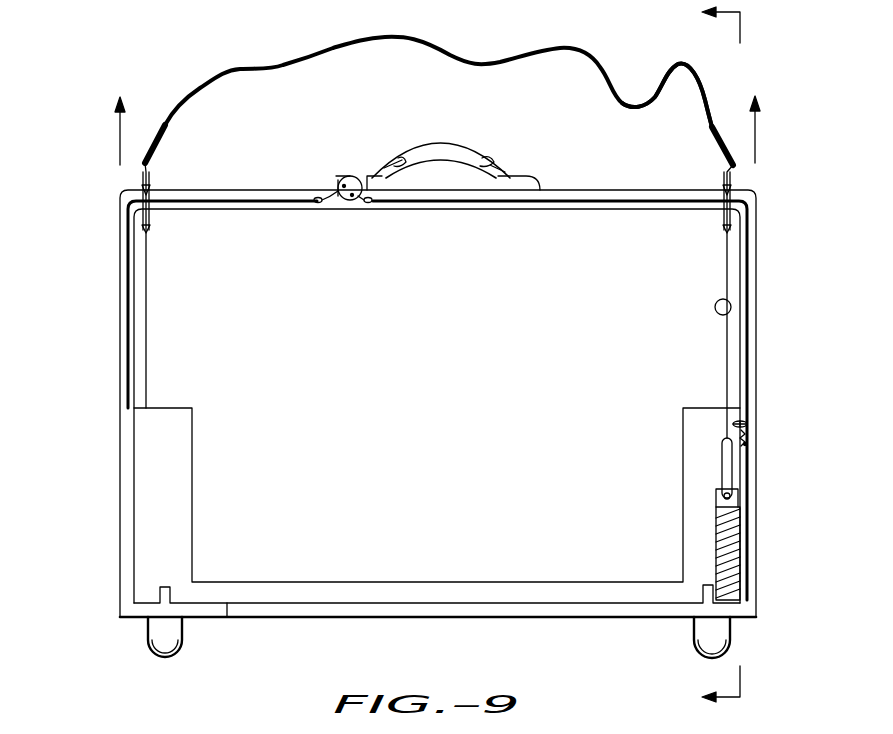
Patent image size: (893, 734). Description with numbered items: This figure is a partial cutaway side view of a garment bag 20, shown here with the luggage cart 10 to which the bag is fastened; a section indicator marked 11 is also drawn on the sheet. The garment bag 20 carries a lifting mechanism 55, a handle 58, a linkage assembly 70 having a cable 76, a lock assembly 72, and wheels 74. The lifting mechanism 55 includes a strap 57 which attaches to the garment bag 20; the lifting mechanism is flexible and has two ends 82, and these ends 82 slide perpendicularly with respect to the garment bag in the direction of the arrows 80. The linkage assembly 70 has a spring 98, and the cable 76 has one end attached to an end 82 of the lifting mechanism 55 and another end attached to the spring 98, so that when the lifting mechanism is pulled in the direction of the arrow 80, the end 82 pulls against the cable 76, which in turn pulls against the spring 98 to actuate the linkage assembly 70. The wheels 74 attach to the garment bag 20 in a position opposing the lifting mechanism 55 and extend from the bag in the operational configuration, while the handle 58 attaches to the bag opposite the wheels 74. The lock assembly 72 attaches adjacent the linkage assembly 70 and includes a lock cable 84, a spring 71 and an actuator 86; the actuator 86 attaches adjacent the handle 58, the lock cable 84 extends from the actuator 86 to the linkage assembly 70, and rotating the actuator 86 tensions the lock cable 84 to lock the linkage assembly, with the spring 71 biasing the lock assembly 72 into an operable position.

The luggage cart 10 is at (120, 545).
The section line 11- 11 is at (709, 356).
The garment bag 20 is at (82, 357).
The lifting mechanism 55 is at (703, 80).
The strap 57 is at (598, 46).
The handle 58 is at (478, 158).
The linkage assembly 70 is at (738, 497).
The spring 71 is at (748, 440).
The lock assembly 72 is at (748, 424).
The wheels 74 is at (143, 634).
The cable 76 is at (733, 308).
The arrows 80 is at (118, 146).
The ends 82 is at (140, 182).
The lock cable 84 is at (605, 196).
The actuator 86 is at (343, 176).
The spring 98 is at (742, 553).